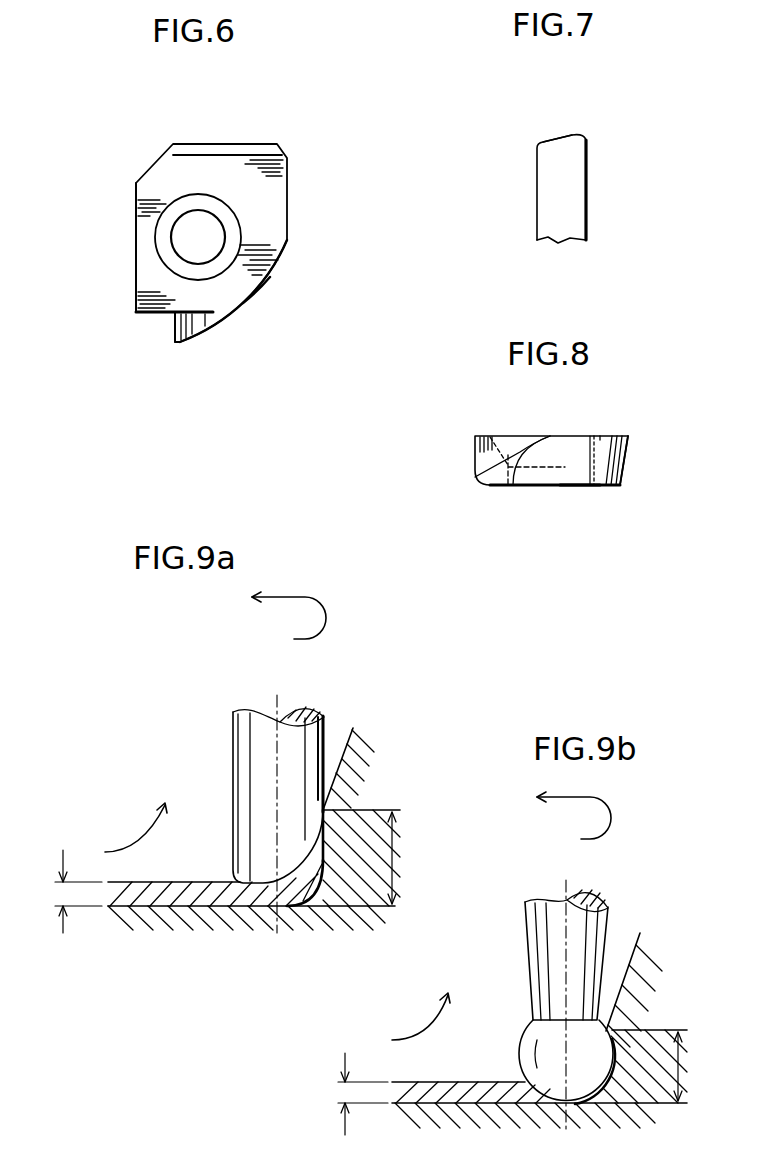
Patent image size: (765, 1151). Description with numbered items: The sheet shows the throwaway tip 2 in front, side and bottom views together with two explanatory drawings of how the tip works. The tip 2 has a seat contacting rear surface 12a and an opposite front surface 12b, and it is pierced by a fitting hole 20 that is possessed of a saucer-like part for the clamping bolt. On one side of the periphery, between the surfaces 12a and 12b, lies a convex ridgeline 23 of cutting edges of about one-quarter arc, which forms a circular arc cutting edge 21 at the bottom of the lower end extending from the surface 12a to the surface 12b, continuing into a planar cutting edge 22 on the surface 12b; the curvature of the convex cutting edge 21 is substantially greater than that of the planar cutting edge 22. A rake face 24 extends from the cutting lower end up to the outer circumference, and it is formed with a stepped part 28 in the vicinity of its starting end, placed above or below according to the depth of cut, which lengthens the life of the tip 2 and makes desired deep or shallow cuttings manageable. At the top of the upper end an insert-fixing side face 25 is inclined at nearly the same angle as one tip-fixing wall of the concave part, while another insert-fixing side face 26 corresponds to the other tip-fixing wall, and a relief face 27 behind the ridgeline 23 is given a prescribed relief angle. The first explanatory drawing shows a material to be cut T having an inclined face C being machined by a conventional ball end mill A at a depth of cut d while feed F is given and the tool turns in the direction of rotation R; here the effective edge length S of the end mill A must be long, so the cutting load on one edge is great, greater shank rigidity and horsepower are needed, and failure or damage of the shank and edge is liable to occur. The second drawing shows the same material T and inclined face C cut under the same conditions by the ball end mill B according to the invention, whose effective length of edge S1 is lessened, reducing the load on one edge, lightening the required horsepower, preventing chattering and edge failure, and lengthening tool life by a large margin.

In FIG. 6, the throwaway tip 2 is at (143, 167).
In FIG. 7, the throwaway tip 2 is at (597, 213).
In FIG. 8, the throwaway tip 2 is at (463, 443).
In FIG. 8, the seat contacting (rear) surface 12a is at (580, 486).
In FIG. 6, the opposite (front) surface 12b is at (248, 283).
In FIG. 8, the opposite (front) surface 12b is at (516, 436).
In FIG. 6, the fitting hole 20 is at (220, 228).
In FIG. 8, the fitting hole 20 is at (580, 436).
In FIG. 8, the circular arc cutting edge 21 is at (475, 477).
In FIG. 8, the planar cutting edge 22 is at (600, 436).
In FIG. 6, the ridgeline of cutting edges 23 is at (253, 302).
In FIG. 8, the ridgeline of cutting edges 23 is at (630, 437).
In FIG. 6, the rake face 24 is at (185, 340).
In FIG. 6, the insert-fixing side face 25 is at (247, 153).
In FIG. 7, the insert-fixing side face 25 is at (551, 140).
In FIG. 6, the insert-fixing side face 26 is at (136, 242).
In FIG. 8, the relief face 27 is at (625, 473).
In FIG. 6, the stepped part 28 is at (146, 314).
In FIG. 9a, the conventional ball end mill A is at (326, 726).
In FIG. 9b, the ball end mill according to the invention B is at (613, 913).
In FIG. 9a, the inclined face C is at (340, 757).
In FIG. 9b, the inclined face C is at (630, 957).
In FIG. 9a, the material to be cut T is at (355, 785).
In FIG. 9b, the material to be cut T is at (637, 997).
In FIG. 9a, the direction of rotation of the tool R is at (264, 637).
In FIG. 9b, the direction of rotation of the tool R is at (557, 840).
In FIG. 9a, the feed F is at (141, 827).
In FIG. 9b, the feed F is at (425, 1016).
In FIG. 9a, the effective edge length S is at (398, 858).
In FIG. 9b, the effective length of edge S1 is at (691, 1066).
In FIG. 9a, the depth of cut d is at (70, 891).
In FIG. 9b, the depth of cut d is at (351, 1094).